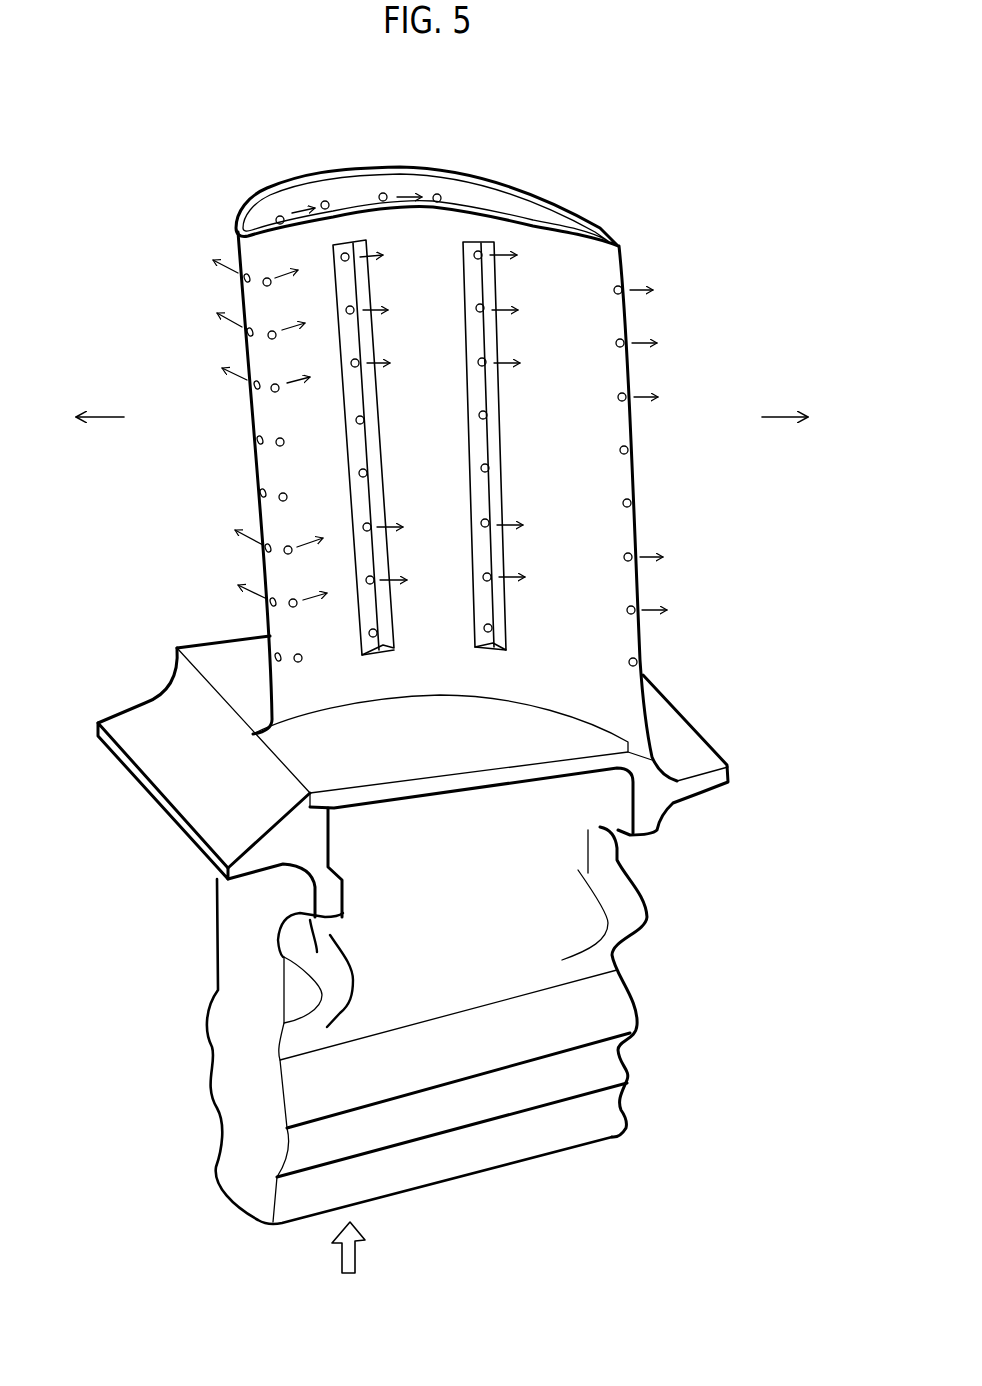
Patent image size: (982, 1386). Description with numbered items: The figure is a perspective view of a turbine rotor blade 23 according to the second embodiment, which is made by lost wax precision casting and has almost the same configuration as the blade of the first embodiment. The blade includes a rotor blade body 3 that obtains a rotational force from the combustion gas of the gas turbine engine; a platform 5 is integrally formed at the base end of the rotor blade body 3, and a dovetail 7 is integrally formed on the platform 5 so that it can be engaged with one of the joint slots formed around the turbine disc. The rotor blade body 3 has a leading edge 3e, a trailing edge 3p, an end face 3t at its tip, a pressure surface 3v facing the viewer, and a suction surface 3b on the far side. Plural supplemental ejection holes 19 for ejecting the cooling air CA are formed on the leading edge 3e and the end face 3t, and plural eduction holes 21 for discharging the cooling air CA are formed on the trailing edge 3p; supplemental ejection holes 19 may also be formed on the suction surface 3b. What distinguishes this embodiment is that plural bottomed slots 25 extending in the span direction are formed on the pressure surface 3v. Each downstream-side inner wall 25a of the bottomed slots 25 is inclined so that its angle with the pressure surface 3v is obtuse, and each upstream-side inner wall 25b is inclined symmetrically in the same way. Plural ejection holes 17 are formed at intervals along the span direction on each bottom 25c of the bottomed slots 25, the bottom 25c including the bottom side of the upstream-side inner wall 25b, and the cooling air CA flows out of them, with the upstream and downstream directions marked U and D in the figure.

The rotor blade body 3 is at (253, 447).
The suction surface 3b is at (580, 473).
The leading edge 3e is at (238, 300).
The trailing edge 3p is at (640, 425).
The end face 3t is at (343, 197).
The pressure surface 3v is at (287, 470).
The platform 5 is at (148, 717).
The dovetail 7 is at (210, 1053).
The ejection holes 17 is at (345, 310).
The supplemental ejection holes 19 is at (280, 216).
The eduction holes 21 is at (620, 296).
The turbine rotor blade 23 is at (577, 140).
The bottomed slots 25 is at (378, 410).
The downstream-side inner wall 25a is at (382, 450).
The upstream-side inner wall 25b is at (348, 436).
The bottom 25c is at (384, 499).
The cooling air CA is at (293, 213).
The upstream direction U is at (86, 419).
The downstream direction D is at (798, 422).